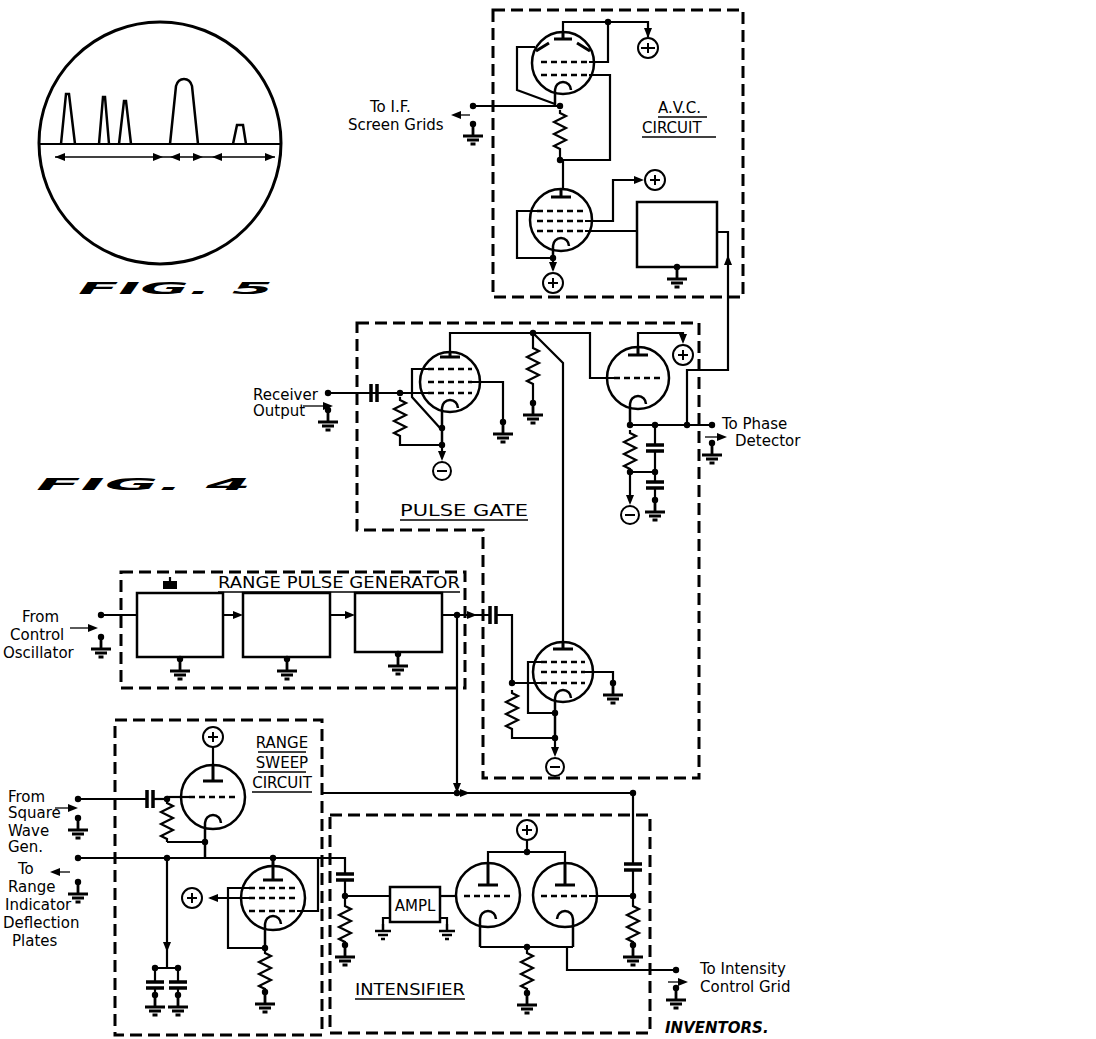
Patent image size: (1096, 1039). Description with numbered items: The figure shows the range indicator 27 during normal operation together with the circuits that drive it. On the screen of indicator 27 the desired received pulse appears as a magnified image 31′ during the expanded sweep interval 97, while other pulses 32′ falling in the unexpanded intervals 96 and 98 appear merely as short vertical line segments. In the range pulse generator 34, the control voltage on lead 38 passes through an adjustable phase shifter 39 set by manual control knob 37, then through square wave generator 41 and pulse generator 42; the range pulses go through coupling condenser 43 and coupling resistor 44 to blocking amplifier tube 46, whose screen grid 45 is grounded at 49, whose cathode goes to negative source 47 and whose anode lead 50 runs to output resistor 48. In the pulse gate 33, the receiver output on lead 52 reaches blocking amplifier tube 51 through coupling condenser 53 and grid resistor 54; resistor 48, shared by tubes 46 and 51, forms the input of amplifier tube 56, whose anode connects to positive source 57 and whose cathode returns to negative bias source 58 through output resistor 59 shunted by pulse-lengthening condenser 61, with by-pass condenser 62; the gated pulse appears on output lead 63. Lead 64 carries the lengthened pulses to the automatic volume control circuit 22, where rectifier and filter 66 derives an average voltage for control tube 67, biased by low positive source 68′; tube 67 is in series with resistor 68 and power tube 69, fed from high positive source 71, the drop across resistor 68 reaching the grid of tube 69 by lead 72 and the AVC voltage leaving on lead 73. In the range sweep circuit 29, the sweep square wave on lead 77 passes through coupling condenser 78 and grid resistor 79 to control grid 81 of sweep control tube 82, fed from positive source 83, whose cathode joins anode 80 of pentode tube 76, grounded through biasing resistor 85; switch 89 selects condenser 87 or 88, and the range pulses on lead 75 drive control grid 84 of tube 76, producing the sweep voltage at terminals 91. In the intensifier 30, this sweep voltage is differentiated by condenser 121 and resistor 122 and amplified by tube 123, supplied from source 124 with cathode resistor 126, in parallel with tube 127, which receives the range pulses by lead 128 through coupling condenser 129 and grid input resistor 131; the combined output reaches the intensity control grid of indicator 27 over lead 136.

In FIG. 5, the range indicator 27 is at (233, 50).
In FIG. 5, the image of desired received pulse 31′ is at (190, 80).
In FIG. 5, the other pulses 32′ is at (104, 98).
In FIG. 5, the sweep interval 96 is at (104, 169).
In FIG. 5, the magnified sweep interval 97 is at (187, 169).
In FIG. 5, the sweep interval 98 is at (240, 169).
In FIG. 4, the automatic volume control circuit 22 is at (492, 50).
In FIG. 4, the power tube 69 is at (548, 32).
In FIG. 4, the source of high positive voltage 71 is at (657, 50).
In FIG. 4, the lead 72 is at (610, 96).
In FIG. 4, the lead 73 is at (472, 102).
In FIG. 4, the resistor 68 is at (552, 140).
In FIG. 4, the control tube 67 is at (580, 190).
In FIG. 4, the source of low positive voltage 68′ is at (566, 276).
In FIG. 4, the rectifier and filter 66 is at (676, 200).
In FIG. 4, the lead 64 is at (731, 318).
In FIG. 4, the pulse gate 33 is at (356, 366).
In FIG. 4, the lead 52 is at (341, 391).
In FIG. 4, the coupling condenser 53 is at (385, 378).
In FIG. 4, the blocking amplifier tube 51 is at (424, 360).
In FIG. 4, the grid resistor 54 is at (395, 432).
In FIG. 4, the source of fairly high negative voltage 47 is at (450, 475).
In FIG. 4, the output resistor 48 is at (530, 361).
In FIG. 4, the pulse gate output connection 50 is at (564, 487).
In FIG. 4, the amplifier tube 56 is at (612, 393).
In FIG. 4, the source of high positive potential 57 is at (696, 349).
In FIG. 4, the output lead 63 is at (713, 422).
In FIG. 4, the output resistor 59 is at (624, 462).
In FIG. 4, the source of low negative biasing potential 58 is at (621, 512).
In FIG. 4, the condenser 61 is at (662, 453).
In FIG. 4, the by-pass condenser 62 is at (662, 486).
In FIG. 4, the range pulse generator 34 is at (254, 570).
In FIG. 4, the manual control knob 37 is at (166, 588).
In FIG. 4, the lead 38 is at (106, 600).
In FIG. 4, the adjustable phase shifter 39 is at (199, 658).
In FIG. 4, the square wave generator 41 is at (312, 658).
In FIG. 4, the pulse generator 42 is at (418, 656).
In FIG. 4, the coupling condenser 43 is at (497, 606).
In FIG. 4, the lead 75 is at (400, 792).
In FIG. 4, the screen grid 45 is at (549, 652).
In FIG. 4, the blocking amplifier tube 46 is at (577, 706).
In FIG. 4, the ground connection 49 is at (594, 669).
In FIG. 4, the coupling resistor 44 is at (506, 734).
In FIG. 4, the range sweep circuit 29 is at (114, 742).
In FIG. 4, the control grid 81 is at (194, 785).
In FIG. 4, the sweep control tube 82 is at (196, 771).
In FIG. 4, the source of positive potential 83 is at (202, 738).
In FIG. 4, the lead 77 is at (94, 797).
In FIG. 4, the coupling condenser 78 is at (150, 790).
In FIG. 4, the grid resistor 79 is at (162, 834).
In FIG. 4, the terminals 91 is at (124, 861).
In FIG. 4, the switch 89 is at (160, 960).
In FIG. 4, the condenser 87 is at (148, 985).
In FIG. 4, the condenser 88 is at (185, 985).
In FIG. 4, the anode 80 is at (252, 884).
In FIG. 4, the control grid 84 is at (232, 926).
In FIG. 4, the sweep control tube 76 is at (284, 938).
In FIG. 4, the biasing resistor 85 is at (274, 972).
In FIG. 4, the intensifier 30 is at (651, 855).
In FIG. 4, the lead 128 is at (640, 798).
In FIG. 4, the coupling condenser 129 is at (627, 870).
In FIG. 4, the grid input resistor 131 is at (626, 920).
In FIG. 4, the condenser 121 is at (350, 876).
In FIG. 4, the resistor 122 is at (350, 939).
In FIG. 4, the amplifier tube 123 is at (470, 872).
In FIG. 4, the tube 127 is at (580, 864).
In FIG. 4, the source of high positive potential 124 is at (538, 833).
In FIG. 4, the resistor 126 is at (522, 968).
In FIG. 4, the lead 136 is at (674, 968).